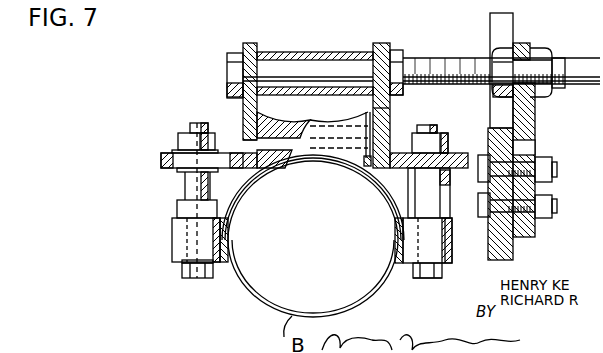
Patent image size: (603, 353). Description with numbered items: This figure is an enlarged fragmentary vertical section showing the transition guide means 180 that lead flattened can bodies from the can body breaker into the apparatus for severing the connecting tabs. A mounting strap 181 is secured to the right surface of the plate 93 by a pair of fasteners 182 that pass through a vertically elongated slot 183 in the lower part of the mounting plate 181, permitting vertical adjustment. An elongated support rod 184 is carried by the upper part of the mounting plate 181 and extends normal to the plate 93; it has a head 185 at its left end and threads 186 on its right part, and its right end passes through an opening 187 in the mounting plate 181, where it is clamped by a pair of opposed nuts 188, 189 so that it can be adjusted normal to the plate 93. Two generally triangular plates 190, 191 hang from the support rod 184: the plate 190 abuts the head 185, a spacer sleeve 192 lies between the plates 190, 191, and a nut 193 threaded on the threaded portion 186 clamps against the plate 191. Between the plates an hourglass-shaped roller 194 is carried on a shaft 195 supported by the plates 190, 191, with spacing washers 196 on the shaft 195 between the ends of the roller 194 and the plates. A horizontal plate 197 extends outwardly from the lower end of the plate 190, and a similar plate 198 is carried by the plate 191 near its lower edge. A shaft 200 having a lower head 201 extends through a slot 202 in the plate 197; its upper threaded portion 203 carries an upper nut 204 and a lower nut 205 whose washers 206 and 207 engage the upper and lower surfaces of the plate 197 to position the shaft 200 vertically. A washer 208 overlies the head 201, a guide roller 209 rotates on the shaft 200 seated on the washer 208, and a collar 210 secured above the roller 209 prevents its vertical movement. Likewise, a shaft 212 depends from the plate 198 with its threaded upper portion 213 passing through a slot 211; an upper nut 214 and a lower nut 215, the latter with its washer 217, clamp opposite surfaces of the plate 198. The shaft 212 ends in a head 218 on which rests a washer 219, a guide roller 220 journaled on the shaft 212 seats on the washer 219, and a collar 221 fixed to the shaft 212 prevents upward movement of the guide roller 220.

The plate 93 is at (515, 250).
The transition guide means 180 is at (422, 50).
The mounting strap 181 is at (532, 118).
The fasteners 182 is at (553, 203).
The vertically elongated slot 183 is at (530, 148).
The support rod 184 is at (285, 64).
The head 185 is at (235, 53).
The threads 186 is at (452, 68).
The opening 187 is at (530, 48).
The nut 188 is at (511, 53).
The nut 189 is at (565, 58).
The plate 190 is at (243, 107).
The plate 191 is at (386, 110).
The spacer sleeve 192 is at (338, 50).
The nut 193 is at (393, 50).
The roller 194 is at (337, 172).
The shaft 195 is at (283, 143).
The spacing washers 196 is at (258, 158).
The plate 197 is at (163, 154).
The plate 198 is at (457, 153).
The shaft 200 is at (236, 203).
The head 201 is at (183, 225).
The slot 202 is at (176, 160).
The upper threaded portion 203 is at (191, 122).
The upper nut 204 is at (182, 133).
The lower nut 205 is at (182, 209).
The washer 206 is at (177, 149).
The washer 207 is at (180, 171).
The washer 208 is at (195, 279).
The guide roller 209 is at (180, 263).
The collar 210 is at (176, 238).
The slot 211 is at (372, 162).
The shaft 212 is at (430, 194).
The threaded upper portion 213 is at (437, 126).
The upper nut 214 is at (412, 136).
The lower nut 215 is at (447, 176).
The washer 217 is at (396, 220).
The head 218 is at (416, 279).
The washer 219 is at (448, 268).
The guide roller 220 is at (447, 245).
The collar 221 is at (450, 216).